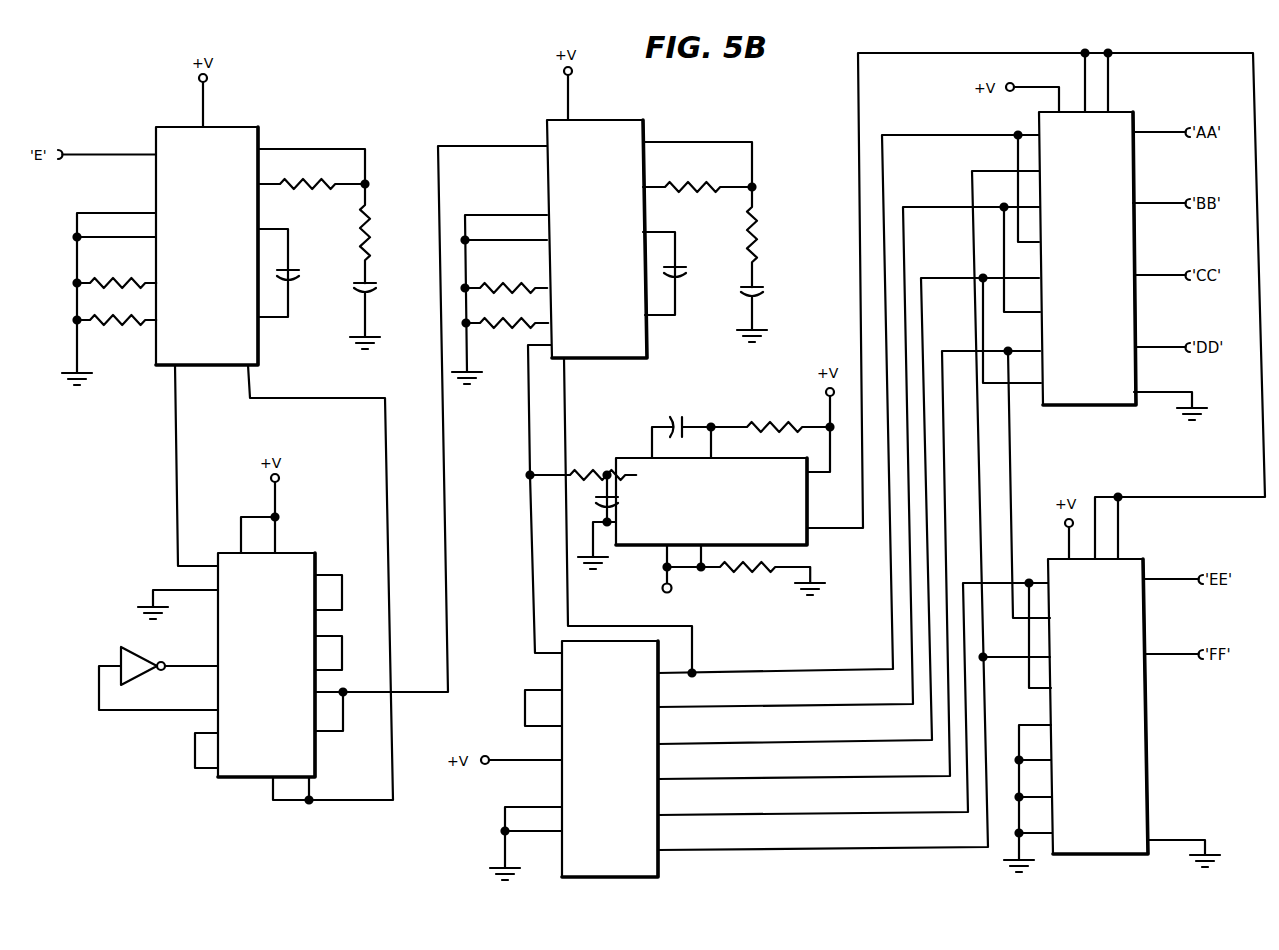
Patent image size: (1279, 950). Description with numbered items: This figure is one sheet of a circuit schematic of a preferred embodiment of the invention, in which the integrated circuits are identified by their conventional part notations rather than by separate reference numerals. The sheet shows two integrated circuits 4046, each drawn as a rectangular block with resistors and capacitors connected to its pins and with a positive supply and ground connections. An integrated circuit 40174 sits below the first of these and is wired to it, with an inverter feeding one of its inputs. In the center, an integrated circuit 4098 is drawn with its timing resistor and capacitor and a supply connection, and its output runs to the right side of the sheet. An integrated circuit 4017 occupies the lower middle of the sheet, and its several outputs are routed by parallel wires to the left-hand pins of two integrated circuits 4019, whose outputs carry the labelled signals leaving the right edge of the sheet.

The 4046 integrated circuit 4046 is at (401, 242).
The 40174 integrated circuit 40174 is at (266, 665).
The 4098 integrated circuit 4098 is at (711, 501).
The 4017 integrated circuit 4017 is at (610, 759).
The 4019 integrated circuit 4019 is at (1093, 483).